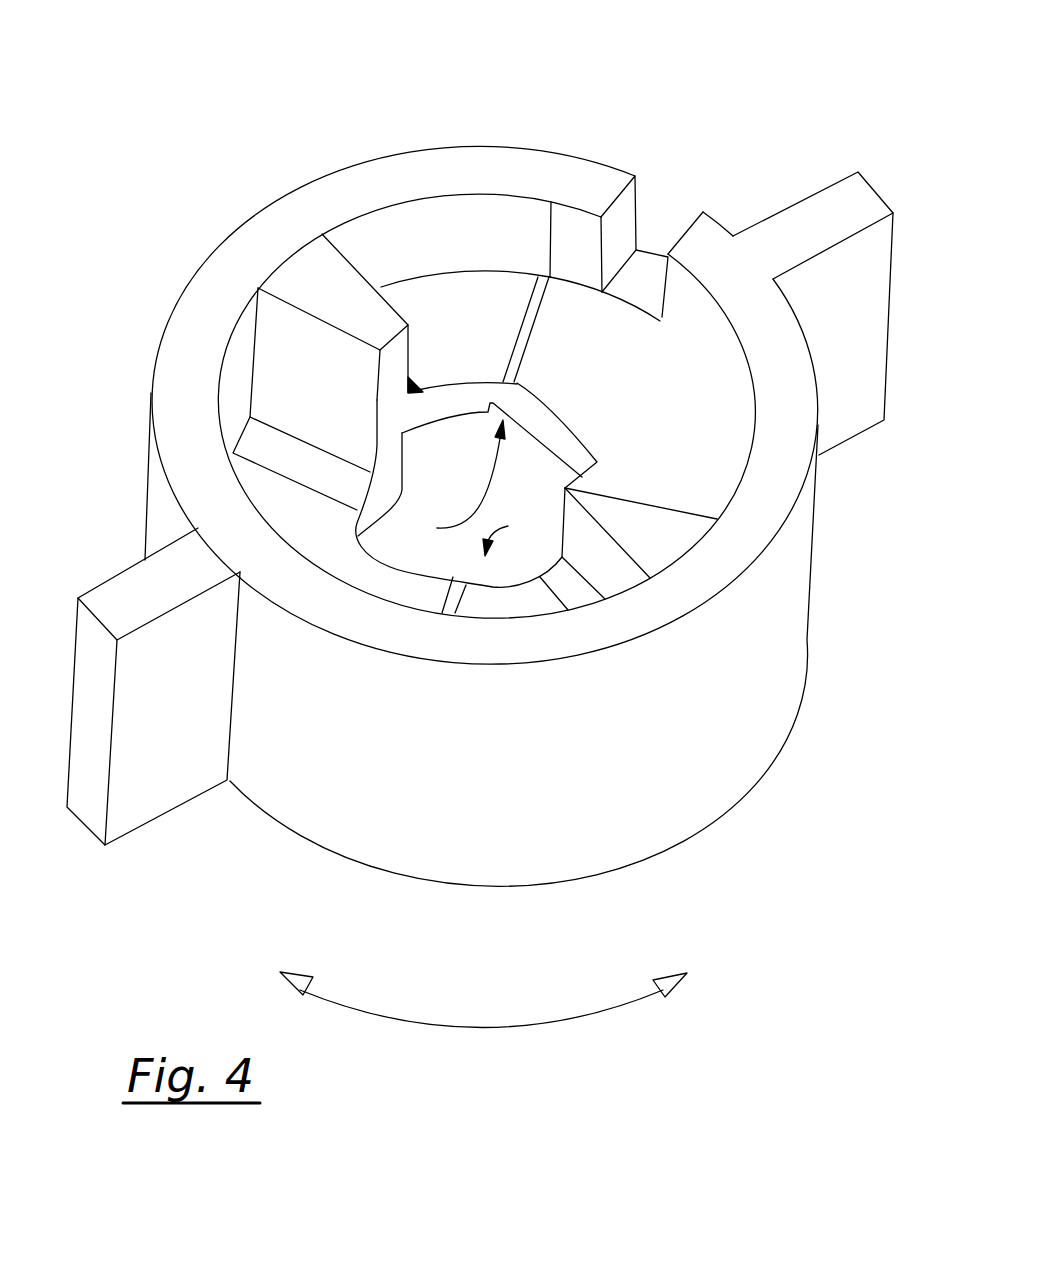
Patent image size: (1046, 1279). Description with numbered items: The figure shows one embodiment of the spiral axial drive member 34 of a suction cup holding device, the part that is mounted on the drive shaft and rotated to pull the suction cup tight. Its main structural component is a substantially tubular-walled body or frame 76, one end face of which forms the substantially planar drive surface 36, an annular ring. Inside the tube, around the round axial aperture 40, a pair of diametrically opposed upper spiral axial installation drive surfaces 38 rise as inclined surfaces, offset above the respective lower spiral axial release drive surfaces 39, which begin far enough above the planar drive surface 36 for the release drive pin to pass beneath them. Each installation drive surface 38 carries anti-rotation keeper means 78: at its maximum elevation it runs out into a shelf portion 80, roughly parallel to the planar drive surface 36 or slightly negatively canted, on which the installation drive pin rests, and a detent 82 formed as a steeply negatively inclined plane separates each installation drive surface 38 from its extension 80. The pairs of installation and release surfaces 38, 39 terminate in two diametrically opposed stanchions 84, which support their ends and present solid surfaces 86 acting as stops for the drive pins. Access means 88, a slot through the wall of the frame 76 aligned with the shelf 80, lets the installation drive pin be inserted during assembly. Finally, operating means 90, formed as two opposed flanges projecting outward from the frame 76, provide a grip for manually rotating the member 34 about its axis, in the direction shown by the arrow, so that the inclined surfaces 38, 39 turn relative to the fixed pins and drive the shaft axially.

The spiral axial drive member 34 is at (596, 48).
The planar drive surface 36 is at (383, 863).
The spiral axial installation drive surfaces 38 is at (664, 412).
The spiral axial release drive surfaces 39 is at (538, 432).
The axial aperture 40 is at (513, 534).
The frame 76 is at (148, 497).
The anti-rotation keeper means 78 is at (453, 563).
The shelf portion 80 is at (474, 322).
The detent 82 is at (510, 360).
The stanchions 84 is at (327, 288).
The solid surfaces 86 is at (322, 395).
The access means 88 is at (670, 190).
The operating means 90 is at (194, 703).